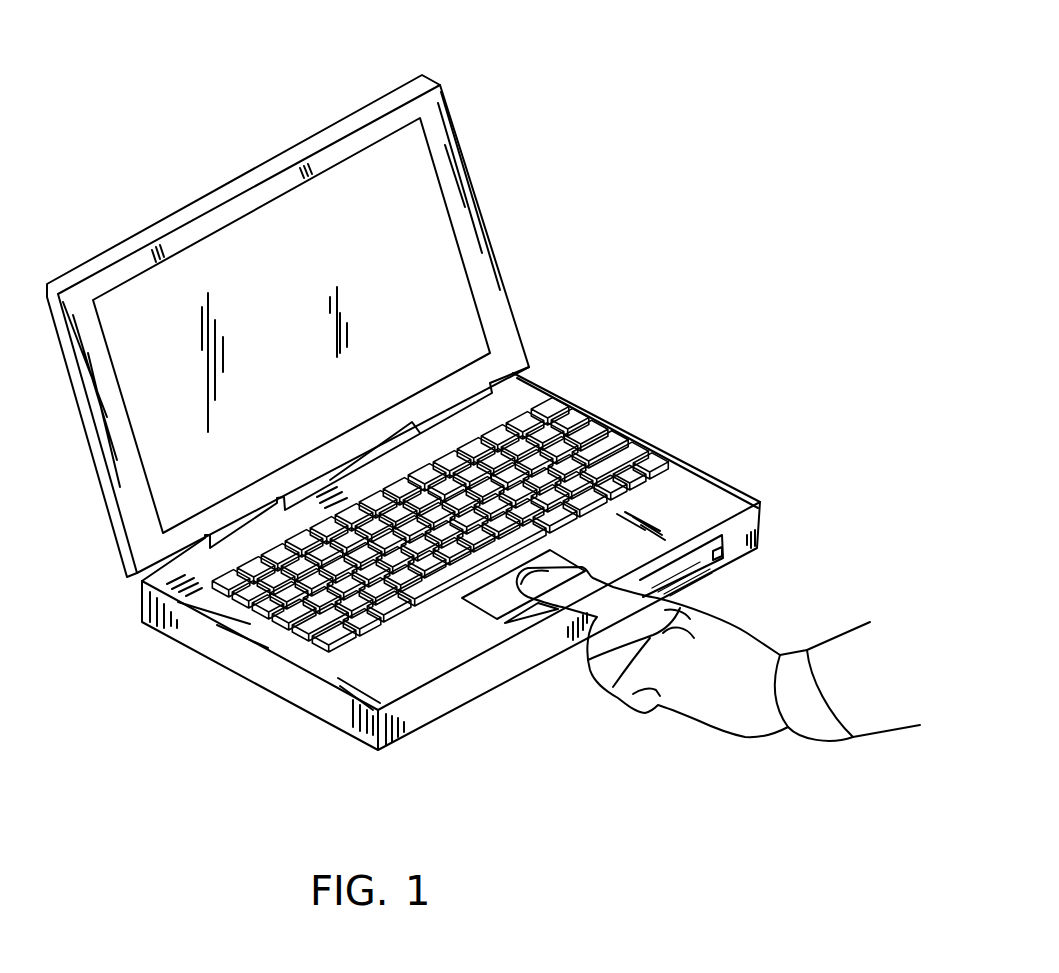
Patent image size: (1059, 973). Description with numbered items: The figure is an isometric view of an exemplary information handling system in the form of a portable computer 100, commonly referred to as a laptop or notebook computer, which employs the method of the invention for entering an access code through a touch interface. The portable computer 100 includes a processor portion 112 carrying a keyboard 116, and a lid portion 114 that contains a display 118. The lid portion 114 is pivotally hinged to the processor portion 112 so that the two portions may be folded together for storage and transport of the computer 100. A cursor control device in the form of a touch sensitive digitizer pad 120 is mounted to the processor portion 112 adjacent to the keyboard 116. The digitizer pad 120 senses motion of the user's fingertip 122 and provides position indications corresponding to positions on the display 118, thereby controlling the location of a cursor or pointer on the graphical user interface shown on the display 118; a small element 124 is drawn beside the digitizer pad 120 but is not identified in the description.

The portable computer 100 is at (615, 147).
The processor portion 112 is at (690, 493).
The lid portion 114 is at (485, 292).
The keyboard 116 is at (466, 462).
The display 118 is at (425, 232).
The touch sensitive digitizer pad 120 is at (494, 602).
The user's fingertip 122 is at (612, 598).
The touchpad button 124 is at (530, 614).